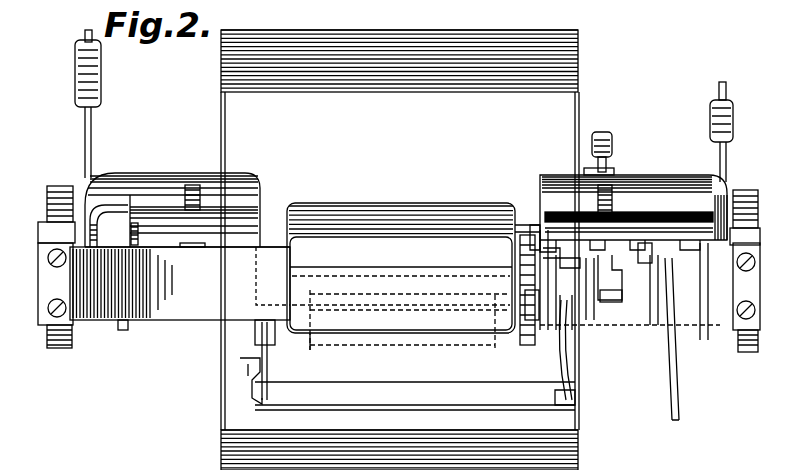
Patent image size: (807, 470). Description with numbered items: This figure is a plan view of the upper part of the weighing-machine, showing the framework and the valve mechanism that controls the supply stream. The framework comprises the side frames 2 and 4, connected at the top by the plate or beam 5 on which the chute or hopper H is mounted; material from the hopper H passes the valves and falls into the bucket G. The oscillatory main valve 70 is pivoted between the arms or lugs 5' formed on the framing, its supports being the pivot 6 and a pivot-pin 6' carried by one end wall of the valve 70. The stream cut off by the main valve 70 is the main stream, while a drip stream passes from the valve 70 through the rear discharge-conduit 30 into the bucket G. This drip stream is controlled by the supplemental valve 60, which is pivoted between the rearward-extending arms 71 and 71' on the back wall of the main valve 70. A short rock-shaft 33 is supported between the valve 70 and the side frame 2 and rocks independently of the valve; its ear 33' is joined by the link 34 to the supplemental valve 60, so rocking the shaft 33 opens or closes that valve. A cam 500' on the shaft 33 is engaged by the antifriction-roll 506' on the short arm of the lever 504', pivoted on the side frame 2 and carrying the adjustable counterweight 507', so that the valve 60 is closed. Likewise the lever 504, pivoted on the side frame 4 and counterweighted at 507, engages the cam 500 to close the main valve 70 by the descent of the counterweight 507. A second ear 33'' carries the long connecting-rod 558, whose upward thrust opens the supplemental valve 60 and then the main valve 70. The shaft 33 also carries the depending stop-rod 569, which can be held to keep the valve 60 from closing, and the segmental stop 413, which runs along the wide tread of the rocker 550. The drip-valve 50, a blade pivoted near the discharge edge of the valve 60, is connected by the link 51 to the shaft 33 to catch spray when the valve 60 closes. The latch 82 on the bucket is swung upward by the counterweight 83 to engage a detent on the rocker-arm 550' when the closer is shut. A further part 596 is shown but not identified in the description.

The bucket G is at (580, 105).
The side frame 2 is at (740, 352).
The side frame 4 is at (62, 348).
The plate or beam 5 is at (180, 298).
The arms or lugs 5' is at (46, 214).
The pivot 6 is at (750, 217).
The pivot-pin 6' is at (527, 262).
The rear discharge-outlet or conduit 30 is at (383, 345).
The rock-shaft 33 is at (628, 213).
The lug or ear 33' is at (517, 254).
The lug or ear 33'' is at (645, 268).
The link 34 is at (630, 300).
The drip-valve 50 is at (298, 395).
The link 51 is at (568, 358).
The supplemental valve 60 is at (298, 367).
The main valve 70 is at (271, 208).
The rearward-extending arm 71 is at (584, 329).
The rearward-extending arm 71' is at (240, 299).
The latch 82 is at (606, 163).
The counterweight 83 is at (612, 143).
The supplemental-valve stop 413 is at (570, 263).
The cam 500 is at (150, 234).
The cam 500' is at (630, 335).
The lever 504 is at (106, 142).
The lever 504' is at (701, 162).
The antifriction-roll 506' is at (702, 297).
The counterweight 507 is at (104, 68).
The adjustable counterweight 507' is at (701, 112).
The rocker 550 is at (600, 260).
The rocker-arm 550' is at (496, 310).
The thrust or connecting rod 558 is at (690, 275).
The stop-rod 569 is at (680, 412).
The pawl 596 is at (627, 285).
The chute or hopper H is at (275, 361).